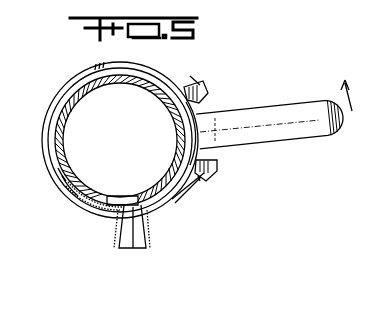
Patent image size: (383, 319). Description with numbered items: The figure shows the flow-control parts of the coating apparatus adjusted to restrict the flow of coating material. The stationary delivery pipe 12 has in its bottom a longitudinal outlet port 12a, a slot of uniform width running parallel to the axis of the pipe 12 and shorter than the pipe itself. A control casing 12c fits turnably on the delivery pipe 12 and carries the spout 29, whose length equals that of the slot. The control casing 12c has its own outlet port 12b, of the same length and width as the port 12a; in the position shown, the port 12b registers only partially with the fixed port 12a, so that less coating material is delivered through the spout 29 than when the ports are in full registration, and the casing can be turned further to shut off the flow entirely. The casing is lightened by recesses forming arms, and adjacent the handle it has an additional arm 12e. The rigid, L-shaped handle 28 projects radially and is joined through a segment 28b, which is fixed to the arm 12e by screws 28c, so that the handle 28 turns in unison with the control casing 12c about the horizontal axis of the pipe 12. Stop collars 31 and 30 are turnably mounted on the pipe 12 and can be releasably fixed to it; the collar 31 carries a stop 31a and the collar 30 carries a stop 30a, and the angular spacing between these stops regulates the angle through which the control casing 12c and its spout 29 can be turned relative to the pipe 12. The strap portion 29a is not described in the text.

The stationary delivery pipe 12 is at (176, 123).
The longitudinal outlet port 12a is at (117, 195).
The outlet port of the control casing 12b is at (128, 249).
The control casing 12c is at (63, 196).
The additional arm 12e is at (56, 172).
The rigid handle 28 is at (288, 132).
The segment 28b is at (196, 108).
The screws 28c is at (186, 88).
The spout 29 is at (148, 235).
The strap portion 29a is at (96, 212).
The stop collar 30 is at (76, 78).
The stop 30a is at (205, 91).
The stop collar 31 is at (177, 200).
The stop 31a is at (213, 168).